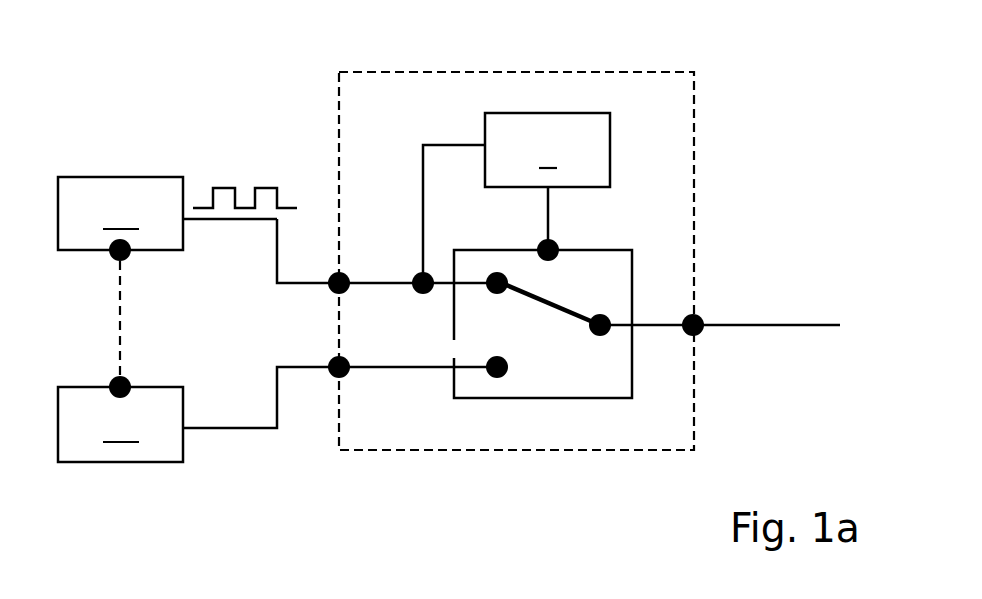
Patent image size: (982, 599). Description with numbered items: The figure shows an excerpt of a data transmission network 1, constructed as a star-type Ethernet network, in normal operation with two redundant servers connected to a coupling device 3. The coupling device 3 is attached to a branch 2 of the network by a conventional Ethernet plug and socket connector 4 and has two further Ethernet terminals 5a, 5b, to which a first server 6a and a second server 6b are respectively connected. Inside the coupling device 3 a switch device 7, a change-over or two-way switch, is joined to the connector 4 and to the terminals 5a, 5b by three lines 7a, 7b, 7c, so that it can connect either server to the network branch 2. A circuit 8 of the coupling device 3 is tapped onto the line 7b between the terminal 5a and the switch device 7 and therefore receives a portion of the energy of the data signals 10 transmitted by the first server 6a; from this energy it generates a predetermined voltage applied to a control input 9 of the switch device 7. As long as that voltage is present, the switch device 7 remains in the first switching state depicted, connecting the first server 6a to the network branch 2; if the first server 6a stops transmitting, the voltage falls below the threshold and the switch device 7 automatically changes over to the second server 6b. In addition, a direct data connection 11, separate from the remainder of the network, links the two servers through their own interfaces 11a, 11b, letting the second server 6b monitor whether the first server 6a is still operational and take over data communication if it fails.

The data transmission network 1 is at (166, 53).
The branch 2 is at (798, 325).
The coupling device 3 is at (698, 72).
The Ethernet plug and socket connector 4 is at (700, 316).
The terminal 5a is at (335, 272).
The terminal 5b is at (335, 378).
The first server 6a is at (198, 230).
The second server 6b is at (198, 414).
The switch device 7 is at (612, 250).
The line 7a is at (652, 327).
The line 7b is at (375, 285).
The line 7c is at (388, 368).
The circuit 8 is at (516, 198).
The control input 9 is at (540, 245).
The data signals 10 is at (245, 185).
The direct data connection 11 is at (118, 323).
The interface 11a is at (130, 257).
The interface 11b is at (130, 383).